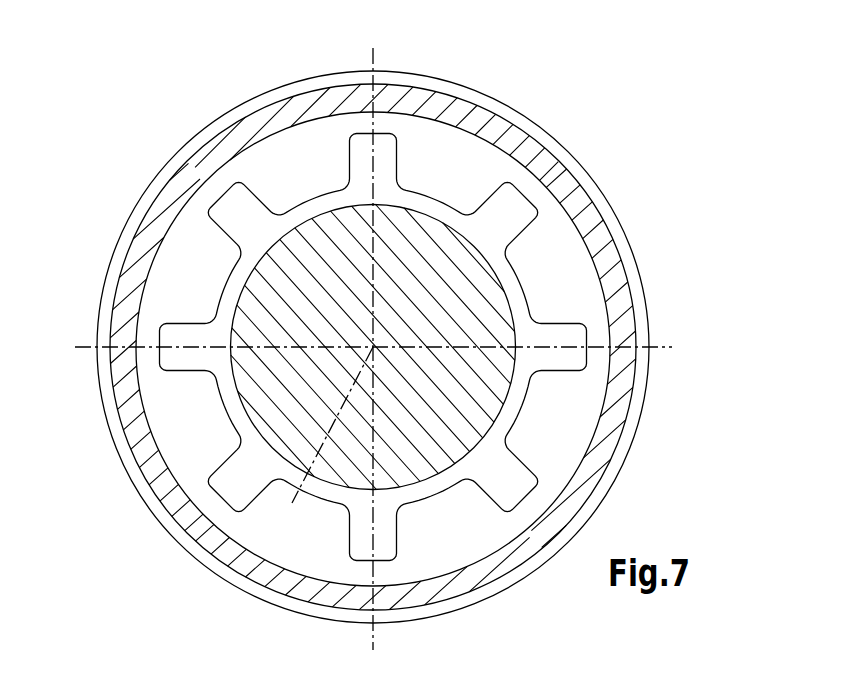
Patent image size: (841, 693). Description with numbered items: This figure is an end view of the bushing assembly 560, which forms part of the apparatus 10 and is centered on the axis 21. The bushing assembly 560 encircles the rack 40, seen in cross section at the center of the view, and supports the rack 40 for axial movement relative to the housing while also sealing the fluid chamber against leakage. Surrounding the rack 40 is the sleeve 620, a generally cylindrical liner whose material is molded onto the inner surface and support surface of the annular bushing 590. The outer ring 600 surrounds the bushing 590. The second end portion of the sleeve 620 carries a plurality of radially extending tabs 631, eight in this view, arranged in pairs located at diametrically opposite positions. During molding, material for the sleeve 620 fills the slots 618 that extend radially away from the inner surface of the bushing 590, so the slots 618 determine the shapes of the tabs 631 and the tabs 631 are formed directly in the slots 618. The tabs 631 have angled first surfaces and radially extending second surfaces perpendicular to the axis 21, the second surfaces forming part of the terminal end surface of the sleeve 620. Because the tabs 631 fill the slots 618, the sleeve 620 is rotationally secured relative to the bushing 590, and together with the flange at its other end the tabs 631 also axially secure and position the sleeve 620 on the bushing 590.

The electric machine 10 is at (668, 148).
The axis 21 is at (324, 349).
The rack 40 is at (293, 275).
The bushing assembly 560 is at (670, 188).
The annular bushing 590 is at (457, 167).
The outer ring / back iron 600 is at (303, 110).
The slots 618 is at (384, 153).
The sleeve 620 is at (240, 403).
The tabs 631 is at (457, 167).